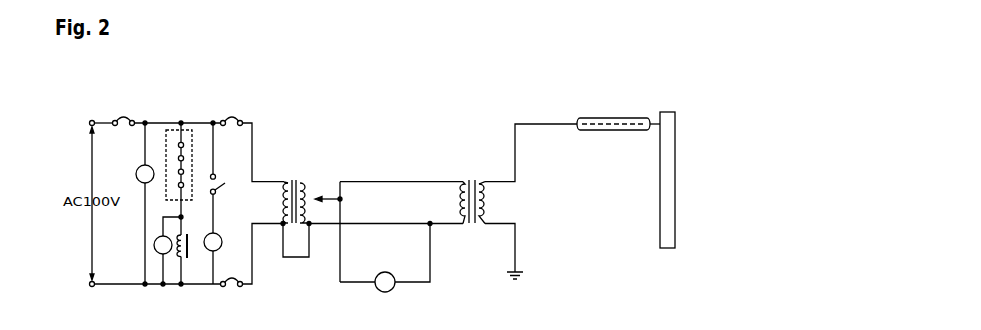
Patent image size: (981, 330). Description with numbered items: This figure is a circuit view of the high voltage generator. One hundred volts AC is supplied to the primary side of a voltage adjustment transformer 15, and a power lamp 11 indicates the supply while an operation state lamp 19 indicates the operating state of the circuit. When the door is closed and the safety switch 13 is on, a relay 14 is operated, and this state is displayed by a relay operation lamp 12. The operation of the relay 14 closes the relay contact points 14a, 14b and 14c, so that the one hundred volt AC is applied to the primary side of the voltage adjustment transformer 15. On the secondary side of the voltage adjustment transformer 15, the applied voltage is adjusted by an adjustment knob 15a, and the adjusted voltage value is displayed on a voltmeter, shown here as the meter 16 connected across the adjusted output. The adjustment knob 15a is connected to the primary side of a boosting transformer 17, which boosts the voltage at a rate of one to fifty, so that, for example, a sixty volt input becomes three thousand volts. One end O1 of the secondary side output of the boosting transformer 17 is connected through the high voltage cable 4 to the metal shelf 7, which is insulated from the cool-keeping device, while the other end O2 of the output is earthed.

The high voltage cable 4 is at (615, 132).
The metal shelf 7 is at (677, 175).
The power lamp 11 is at (135, 177).
The relay operation lamp 12 is at (153, 246).
The safety switch 13 is at (193, 137).
The relay 14 is at (186, 260).
The relay contact point 14a is at (231, 119).
The relay contact point 14b is at (219, 189).
The relay contact point 14c is at (231, 290).
The voltage adjustment transformer 15 is at (297, 177).
The adjustment knob 15a is at (330, 194).
The voltmeter 16 is at (383, 272).
The boosting transformer 17 is at (475, 157).
The operation state lamp 19 is at (219, 239).
The one end of the secondary side output O1 is at (653, 121).
The other end of the output O2 is at (513, 262).